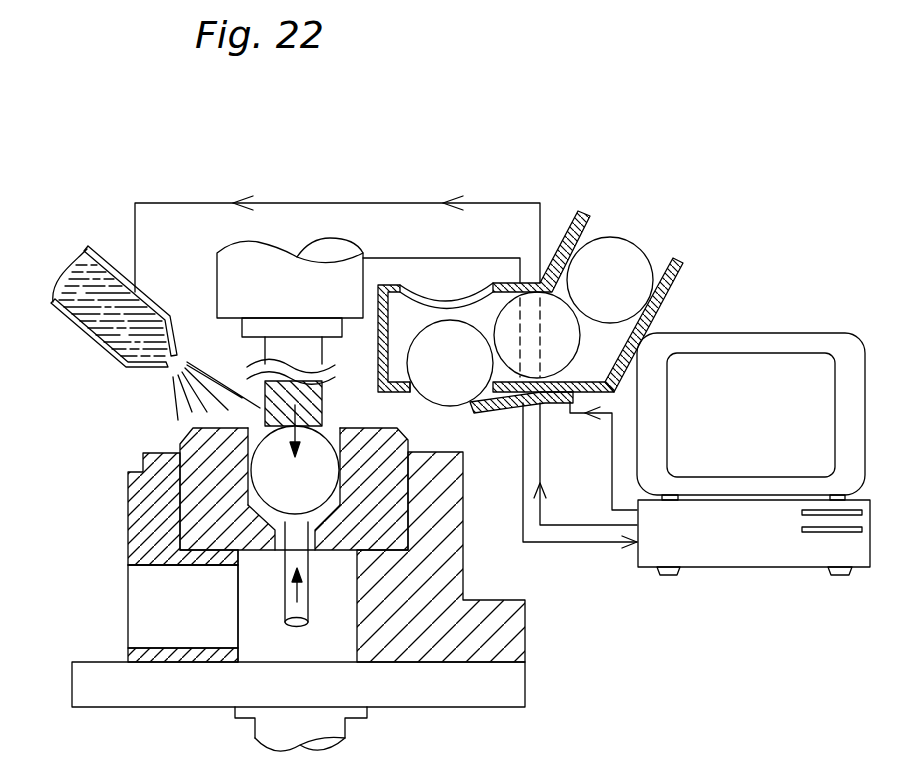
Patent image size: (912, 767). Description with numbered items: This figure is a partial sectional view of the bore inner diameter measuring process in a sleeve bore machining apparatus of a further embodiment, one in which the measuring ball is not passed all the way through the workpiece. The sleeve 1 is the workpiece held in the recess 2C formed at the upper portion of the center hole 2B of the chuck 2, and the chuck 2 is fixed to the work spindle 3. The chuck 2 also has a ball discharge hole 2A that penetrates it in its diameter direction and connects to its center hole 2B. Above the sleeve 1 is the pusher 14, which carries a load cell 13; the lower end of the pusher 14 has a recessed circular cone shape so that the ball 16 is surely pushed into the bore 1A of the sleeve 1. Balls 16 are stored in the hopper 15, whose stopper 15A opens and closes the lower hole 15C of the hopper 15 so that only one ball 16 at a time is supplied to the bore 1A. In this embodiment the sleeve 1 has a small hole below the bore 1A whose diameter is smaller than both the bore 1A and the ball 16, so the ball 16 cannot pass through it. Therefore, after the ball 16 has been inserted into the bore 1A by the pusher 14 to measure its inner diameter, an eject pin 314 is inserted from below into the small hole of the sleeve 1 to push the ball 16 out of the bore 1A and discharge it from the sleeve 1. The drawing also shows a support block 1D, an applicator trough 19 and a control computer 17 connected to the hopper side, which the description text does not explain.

The sleeve 1 is at (190, 489).
The bore 1A is at (253, 507).
The support block 1D is at (447, 544).
The chuck 2 is at (145, 519).
The ball discharge hole 2A is at (147, 569).
The center hole 2B is at (257, 643).
The recess 2C is at (180, 518).
The work spindle 3 is at (100, 690).
The load cell 13 is at (240, 298).
The pusher 14 is at (242, 388).
The hopper 15 is at (566, 236).
The stopper 15A is at (506, 416).
The lower hole 15C is at (408, 392).
The ball 16 is at (252, 447).
The control computer 17 is at (663, 553).
The applicator trough 19 is at (105, 264).
The eject pin 314 is at (305, 615).